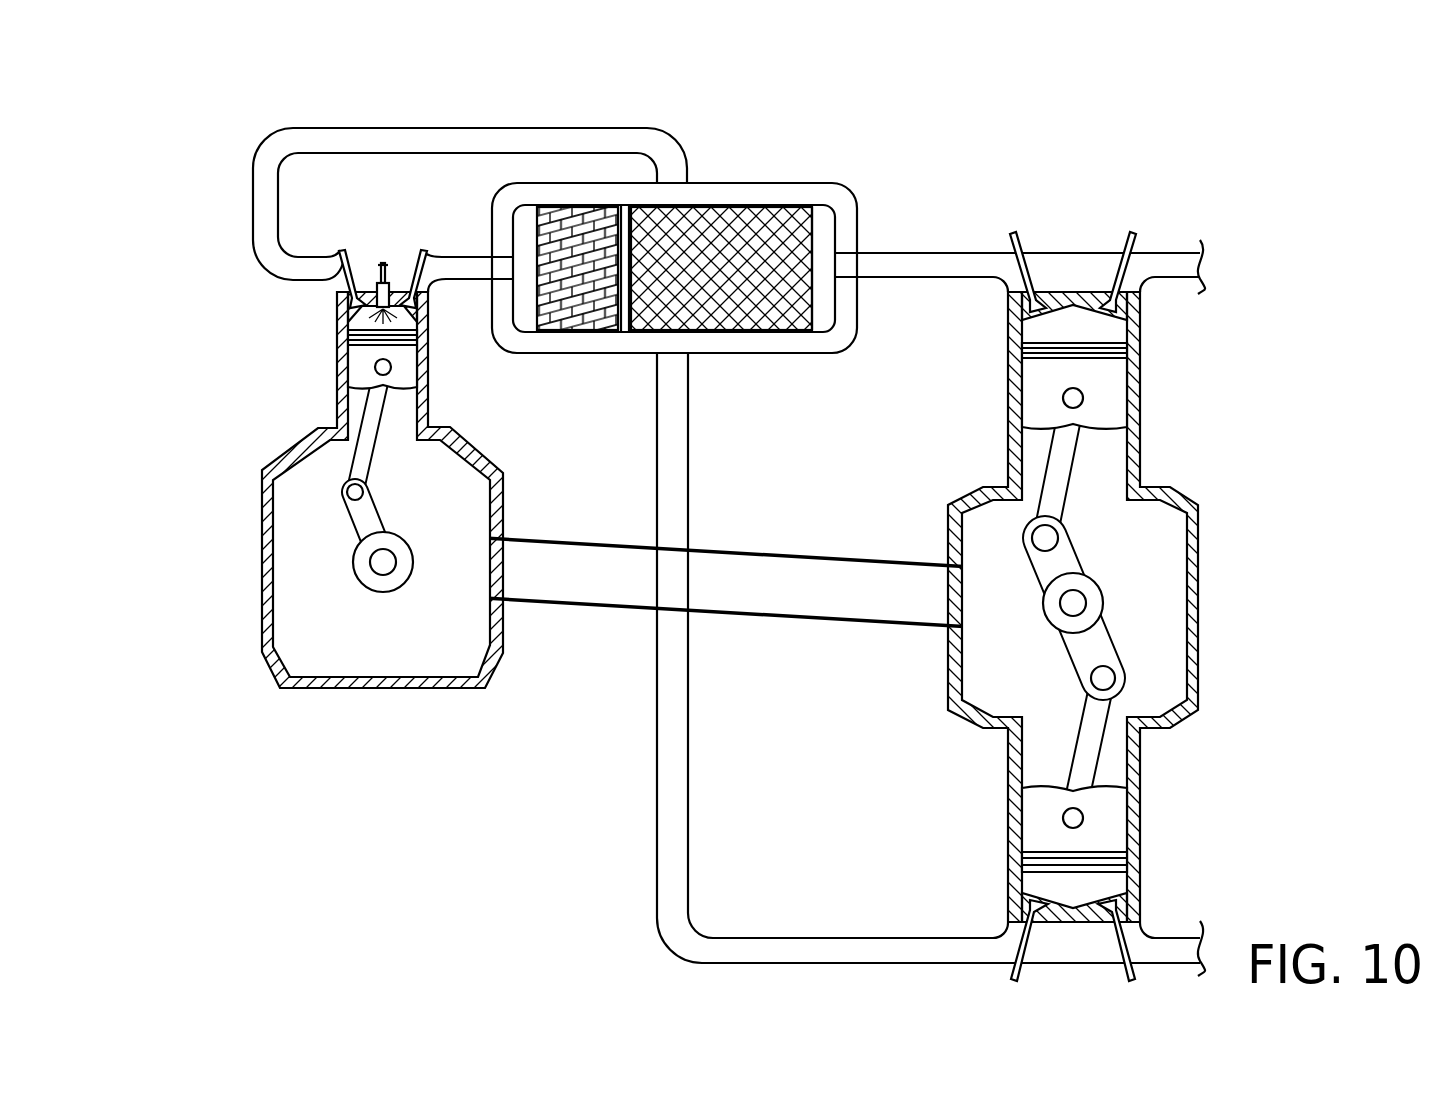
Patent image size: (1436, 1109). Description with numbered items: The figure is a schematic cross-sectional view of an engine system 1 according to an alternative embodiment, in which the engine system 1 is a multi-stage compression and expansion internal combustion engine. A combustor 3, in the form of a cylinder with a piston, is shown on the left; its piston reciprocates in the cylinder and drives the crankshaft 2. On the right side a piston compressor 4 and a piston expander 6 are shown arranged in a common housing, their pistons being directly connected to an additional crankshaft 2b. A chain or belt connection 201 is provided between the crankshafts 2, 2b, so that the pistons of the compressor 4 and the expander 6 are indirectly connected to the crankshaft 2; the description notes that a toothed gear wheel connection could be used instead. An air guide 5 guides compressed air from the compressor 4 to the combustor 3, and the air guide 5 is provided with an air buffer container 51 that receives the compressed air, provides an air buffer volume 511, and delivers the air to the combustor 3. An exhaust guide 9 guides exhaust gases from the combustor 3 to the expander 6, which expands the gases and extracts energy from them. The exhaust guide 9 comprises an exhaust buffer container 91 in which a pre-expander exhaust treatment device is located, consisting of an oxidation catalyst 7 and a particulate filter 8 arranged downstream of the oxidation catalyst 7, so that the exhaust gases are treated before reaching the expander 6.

The engine system 1 is at (137, 128).
The crankshaft 2 is at (353, 563).
The additional crankshaft 2b is at (1104, 608).
The chain or belt connection 201 is at (565, 605).
The combustor 3 is at (333, 367).
The piston compressor 4 is at (1143, 832).
The air guide 5 is at (267, 205).
The piston expander 6 is at (1143, 388).
The oxidation catalyst 7 is at (598, 247).
The particulate filter 8 is at (732, 247).
The exhaust guide 9 is at (467, 268).
The air buffer container 51 is at (823, 177).
The air buffer volume 511 is at (532, 195).
The exhaust buffer container 91 is at (786, 207).